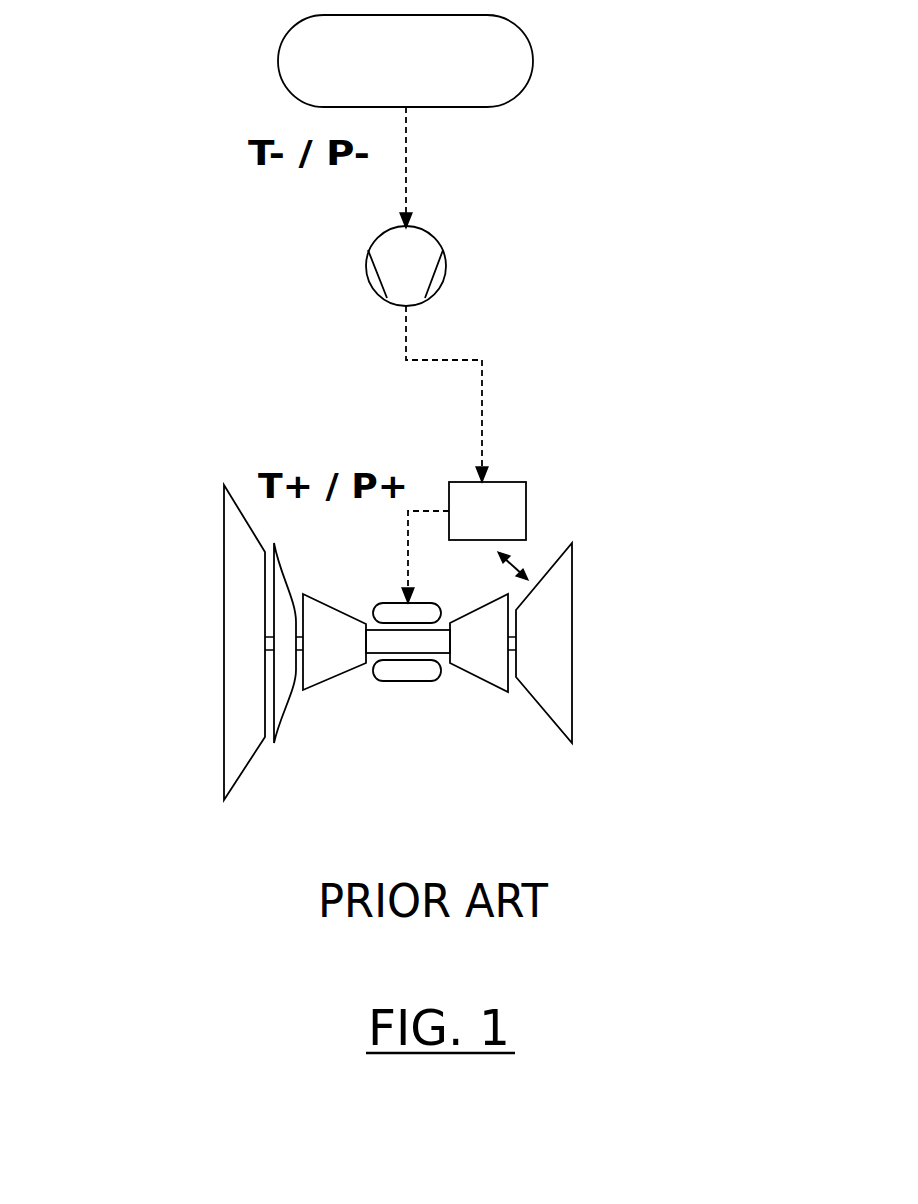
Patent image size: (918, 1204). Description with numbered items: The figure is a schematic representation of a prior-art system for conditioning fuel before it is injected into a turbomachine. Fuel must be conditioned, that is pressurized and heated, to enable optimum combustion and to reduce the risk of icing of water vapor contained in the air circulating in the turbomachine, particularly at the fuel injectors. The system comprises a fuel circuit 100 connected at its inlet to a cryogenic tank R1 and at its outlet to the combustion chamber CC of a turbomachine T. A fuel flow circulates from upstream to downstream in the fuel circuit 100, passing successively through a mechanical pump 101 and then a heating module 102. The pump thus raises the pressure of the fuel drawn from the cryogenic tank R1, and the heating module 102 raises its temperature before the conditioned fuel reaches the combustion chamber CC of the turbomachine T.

The cryogenic tank R1 is at (534, 63).
The fuel circuit 100 is at (406, 168).
The mechanical pump 101 is at (446, 273).
The heating module 102 is at (527, 508).
The turbomachine T is at (185, 573).
The combustion chamber CC is at (400, 683).